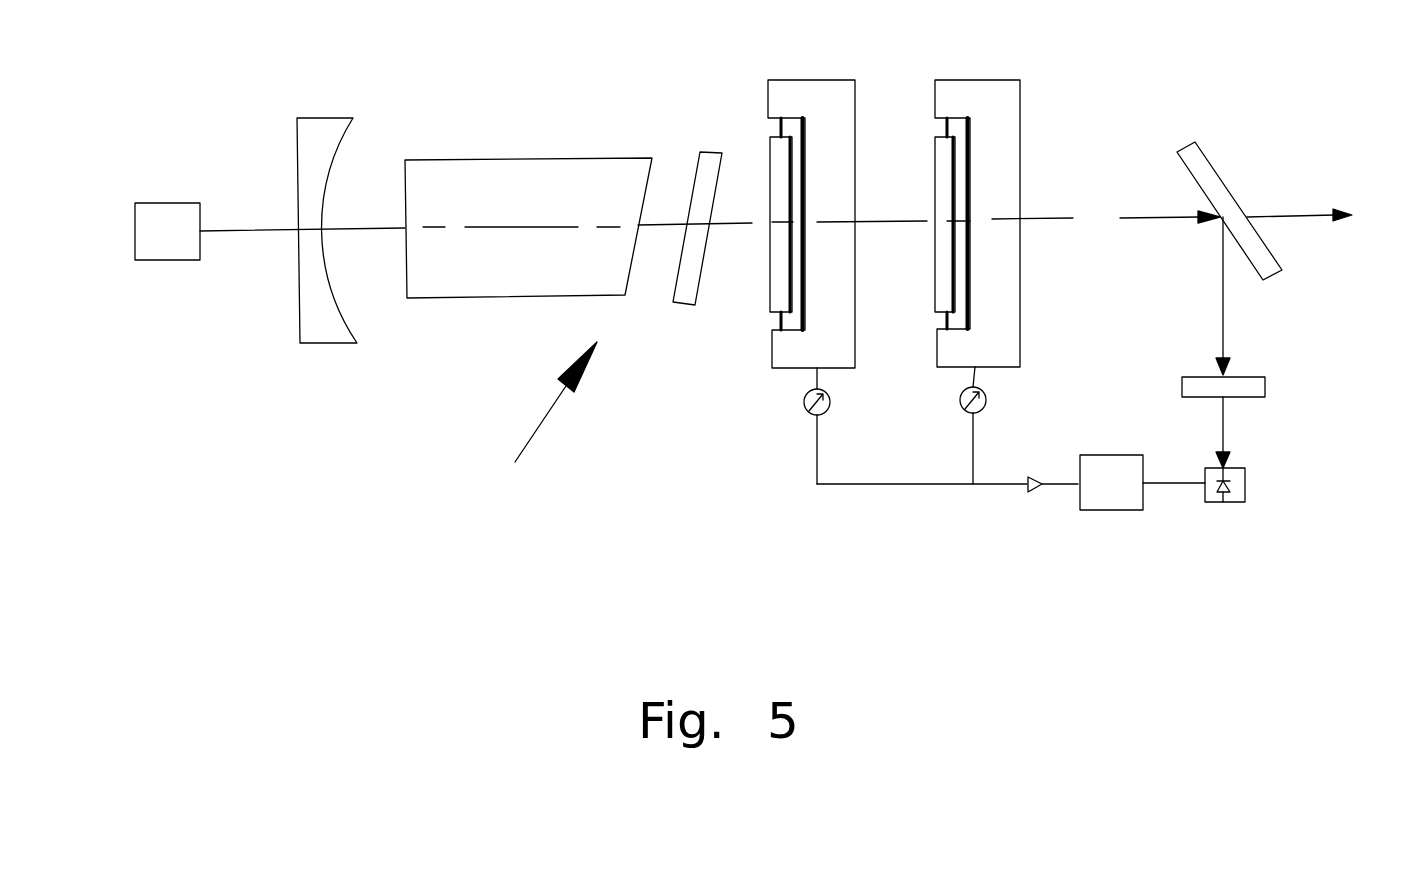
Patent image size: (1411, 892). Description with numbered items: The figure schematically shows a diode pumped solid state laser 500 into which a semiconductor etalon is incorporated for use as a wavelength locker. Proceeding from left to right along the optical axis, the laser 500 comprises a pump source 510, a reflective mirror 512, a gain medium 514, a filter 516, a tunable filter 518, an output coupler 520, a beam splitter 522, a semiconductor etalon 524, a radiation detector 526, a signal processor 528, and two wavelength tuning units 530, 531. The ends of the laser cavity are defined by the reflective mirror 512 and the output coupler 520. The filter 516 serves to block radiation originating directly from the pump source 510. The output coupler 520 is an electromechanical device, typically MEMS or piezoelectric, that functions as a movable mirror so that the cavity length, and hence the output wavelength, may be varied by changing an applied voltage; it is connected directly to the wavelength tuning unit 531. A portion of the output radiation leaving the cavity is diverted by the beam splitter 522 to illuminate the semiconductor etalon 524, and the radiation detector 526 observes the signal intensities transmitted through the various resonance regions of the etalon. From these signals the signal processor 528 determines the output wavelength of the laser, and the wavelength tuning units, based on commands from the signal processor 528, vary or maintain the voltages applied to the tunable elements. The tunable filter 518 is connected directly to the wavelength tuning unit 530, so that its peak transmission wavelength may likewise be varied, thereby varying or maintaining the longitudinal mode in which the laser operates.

The diode pumped solid state laser 500 is at (538, 420).
The pump source 510 is at (160, 203).
The reflective mirror 512 is at (318, 115).
The gain medium 514 is at (500, 157).
The filter 516 is at (710, 150).
The tunable filter 518 is at (813, 77).
The output coupler 520 is at (978, 75).
The beam splitter 522 is at (1215, 167).
The semiconductor etalon 524 is at (1265, 390).
The radiation detector 526 is at (1245, 485).
The signal processor 528 is at (1117, 453).
The wavelength tuning unit 530 is at (805, 408).
The wavelength tuning unit 531 is at (988, 402).